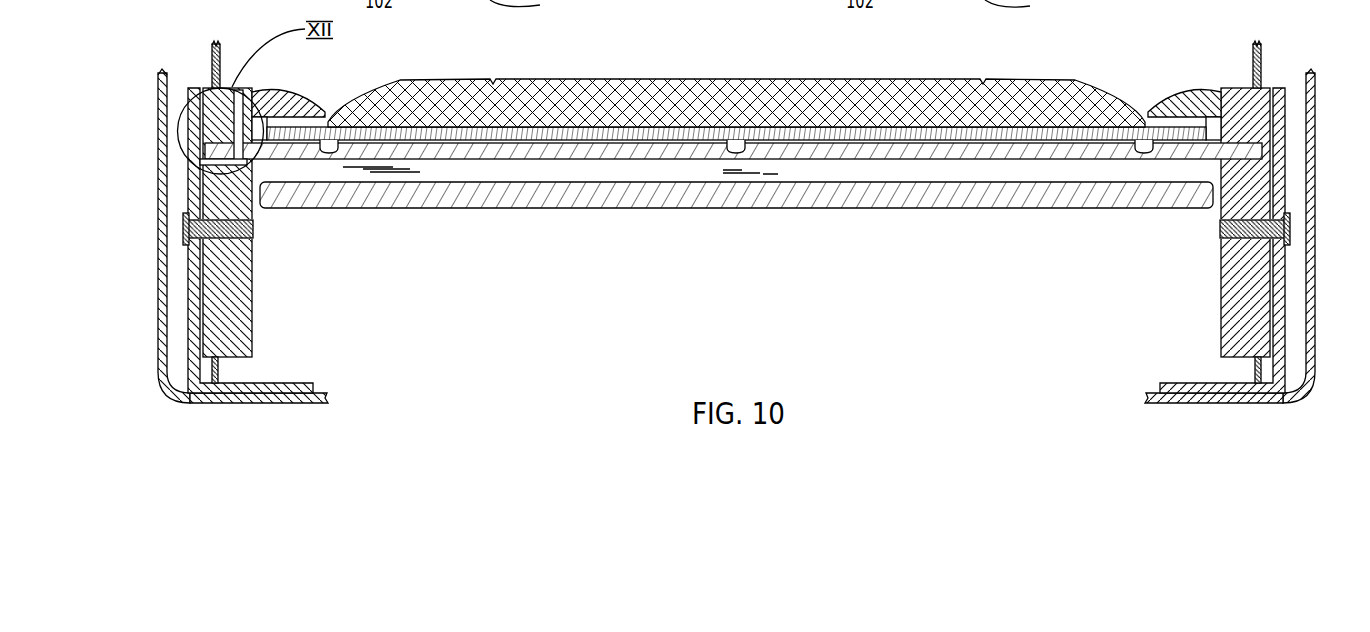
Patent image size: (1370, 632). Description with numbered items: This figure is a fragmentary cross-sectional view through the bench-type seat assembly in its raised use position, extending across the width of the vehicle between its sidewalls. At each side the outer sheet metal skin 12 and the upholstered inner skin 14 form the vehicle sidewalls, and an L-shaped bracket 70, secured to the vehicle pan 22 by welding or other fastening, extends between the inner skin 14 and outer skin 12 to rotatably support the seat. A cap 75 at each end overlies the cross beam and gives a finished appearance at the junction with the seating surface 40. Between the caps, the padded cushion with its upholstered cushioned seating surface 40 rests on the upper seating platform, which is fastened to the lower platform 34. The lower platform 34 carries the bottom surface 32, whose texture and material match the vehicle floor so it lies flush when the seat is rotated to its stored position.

The outer sheet metal skin 12 is at (165, 72).
The inner skin 14 is at (221, 58).
The pan 22 is at (288, 406).
The bottom surface 32 is at (462, 148).
The lower platform 34 is at (578, 172).
The cushioned seating surface 40 is at (534, 80).
The L-shaped bracket 70 is at (277, 382).
The cap 75 is at (273, 96).